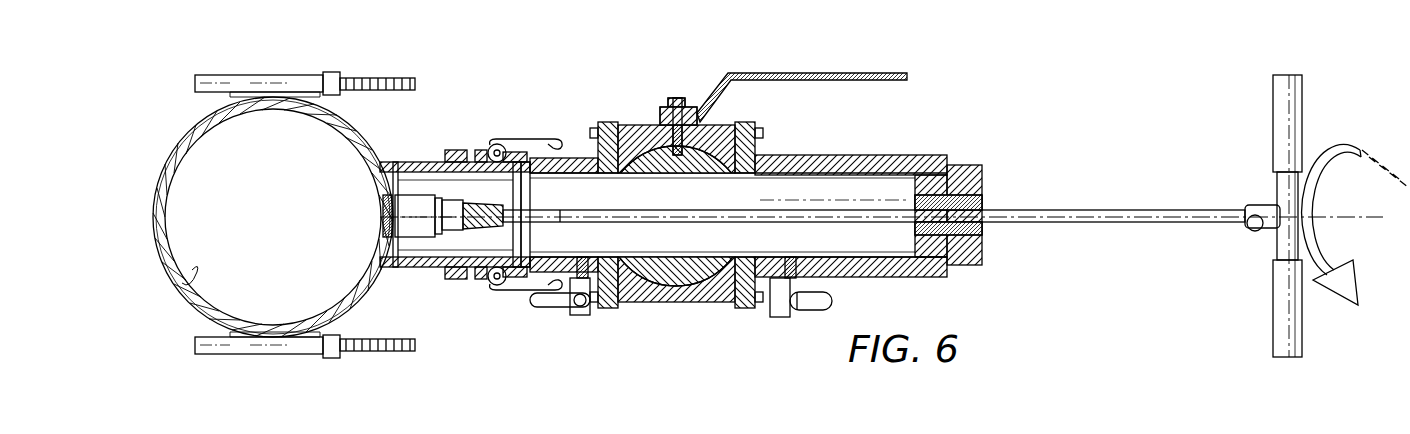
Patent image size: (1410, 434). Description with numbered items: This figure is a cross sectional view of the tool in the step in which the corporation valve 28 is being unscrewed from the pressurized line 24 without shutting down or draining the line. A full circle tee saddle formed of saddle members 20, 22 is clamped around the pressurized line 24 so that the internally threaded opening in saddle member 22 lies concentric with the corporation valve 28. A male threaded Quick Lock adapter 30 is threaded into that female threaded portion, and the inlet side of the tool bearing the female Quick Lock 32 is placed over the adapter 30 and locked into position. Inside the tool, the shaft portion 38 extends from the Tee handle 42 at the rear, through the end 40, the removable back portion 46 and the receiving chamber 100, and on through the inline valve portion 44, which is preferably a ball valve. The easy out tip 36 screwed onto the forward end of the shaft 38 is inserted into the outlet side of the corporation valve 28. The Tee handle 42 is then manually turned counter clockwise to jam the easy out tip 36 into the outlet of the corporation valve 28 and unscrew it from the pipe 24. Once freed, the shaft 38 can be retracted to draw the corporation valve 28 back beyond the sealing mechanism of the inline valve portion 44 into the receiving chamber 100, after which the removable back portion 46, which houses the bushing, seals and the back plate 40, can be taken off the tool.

The saddle member 20 is at (167, 157).
The saddle member 22 is at (361, 286).
The pressurized line 24 is at (197, 268).
The corporation valve 28 is at (452, 230).
The male threaded Quick Lock adapter 30 is at (450, 148).
The female Quick Lock 32 is at (480, 148).
The easy out tip 36 is at (492, 205).
The shaft portion 38 is at (1032, 226).
The end 40 is at (962, 165).
The Tee handle 42 is at (1273, 122).
The inline valve portion 44 is at (642, 125).
The removable back portion 46 is at (800, 155).
The receiving chamber 100 is at (872, 185).